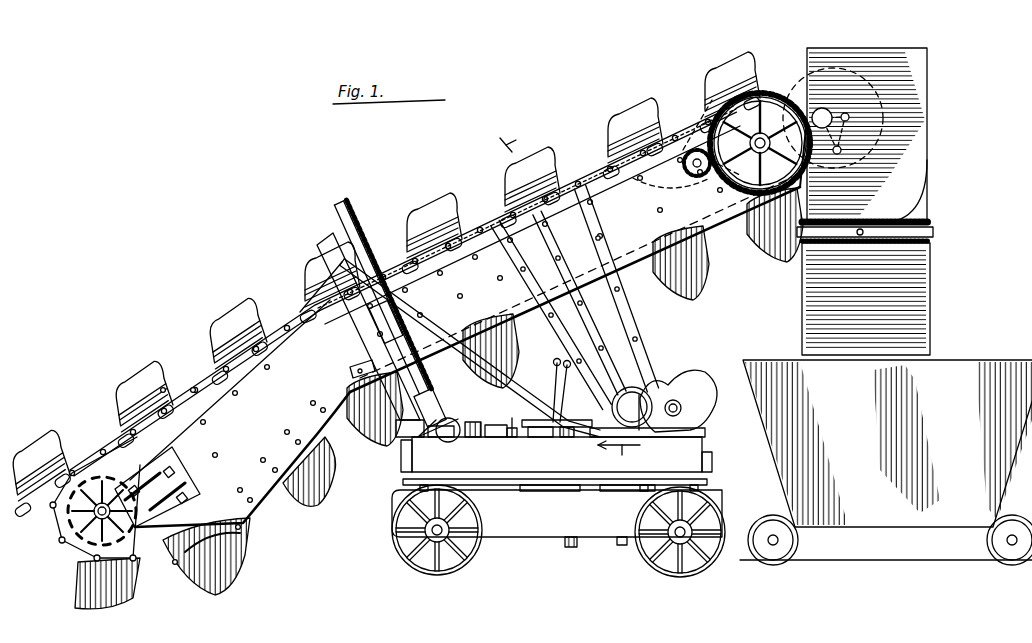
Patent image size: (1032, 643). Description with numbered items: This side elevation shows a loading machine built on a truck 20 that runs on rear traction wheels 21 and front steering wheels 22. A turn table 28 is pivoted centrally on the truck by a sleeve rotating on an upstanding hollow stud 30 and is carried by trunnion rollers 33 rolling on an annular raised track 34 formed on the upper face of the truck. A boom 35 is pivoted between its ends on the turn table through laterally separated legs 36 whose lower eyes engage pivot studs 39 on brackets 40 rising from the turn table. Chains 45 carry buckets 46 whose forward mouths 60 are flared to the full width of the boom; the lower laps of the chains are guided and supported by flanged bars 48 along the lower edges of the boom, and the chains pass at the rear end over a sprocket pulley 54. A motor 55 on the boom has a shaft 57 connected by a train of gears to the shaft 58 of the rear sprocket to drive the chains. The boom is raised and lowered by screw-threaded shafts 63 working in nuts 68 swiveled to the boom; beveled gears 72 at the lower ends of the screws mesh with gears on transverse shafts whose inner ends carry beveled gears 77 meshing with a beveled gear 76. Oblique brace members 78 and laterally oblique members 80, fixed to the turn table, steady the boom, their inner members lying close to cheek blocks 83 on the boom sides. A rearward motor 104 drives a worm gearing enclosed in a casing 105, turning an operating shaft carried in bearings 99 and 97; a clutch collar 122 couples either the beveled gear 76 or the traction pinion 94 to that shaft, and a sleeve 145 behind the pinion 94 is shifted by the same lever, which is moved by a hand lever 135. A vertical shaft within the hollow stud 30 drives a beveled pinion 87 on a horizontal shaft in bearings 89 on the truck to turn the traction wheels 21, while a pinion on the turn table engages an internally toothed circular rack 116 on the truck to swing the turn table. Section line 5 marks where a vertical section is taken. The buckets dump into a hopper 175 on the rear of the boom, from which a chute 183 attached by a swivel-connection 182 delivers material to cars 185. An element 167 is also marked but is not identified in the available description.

The section line 5 is at (566, 296).
The truck 20 is at (557, 508).
The rear traction wheels 21 is at (700, 572).
The front steering wheels 22 is at (392, 542).
The turn table 28 is at (408, 463).
The upstanding hollow stud 30 is at (167, 402).
The trunnion rollers 33 is at (96, 470).
The annular raised track 34 is at (530, 487).
The boom 35 is at (240, 413).
The legs 36 is at (617, 327).
The pivot studs 39 is at (612, 410).
The brackets 40 is at (562, 454).
The chains 45 is at (500, 220).
The buckets 46 is at (207, 328).
The flanged bars 48 is at (182, 568).
The rear sprocket pulley 54 is at (870, 85).
The motor 55 is at (697, 97).
The motor shaft 57 is at (693, 176).
The rear sprocket shaft 58 is at (856, 135).
The bucket mouths 60 is at (752, 72).
The raising and lowering shafts 63 is at (338, 200).
The sleeves or nuts 68 is at (397, 305).
The beveled gears 72 is at (436, 432).
The beveled gear 76 is at (460, 446).
The beveled gears 77 is at (427, 438).
The brace members 78 is at (437, 320).
The laterally oblique members 80 is at (360, 323).
The cheek blocks 83 is at (351, 370).
The beveled pinion 87 is at (571, 547).
The bearings 89 is at (622, 546).
The beveled pinion 94 is at (555, 449).
The bearing 97 is at (531, 448).
The bearing 99 is at (491, 416).
The motor 104 is at (700, 375).
The casing 105 is at (676, 403).
The internally toothed circular rack 116 is at (580, 487).
The clutch collar 122 is at (488, 448).
The hand lever 135 is at (555, 362).
The sleeve 145 is at (522, 420).
The lever 167 is at (555, 372).
The hopper 175 is at (930, 155).
The swivel-connection 182 is at (934, 230).
The discharge chute 183 is at (935, 303).
The cars 185 is at (870, 395).